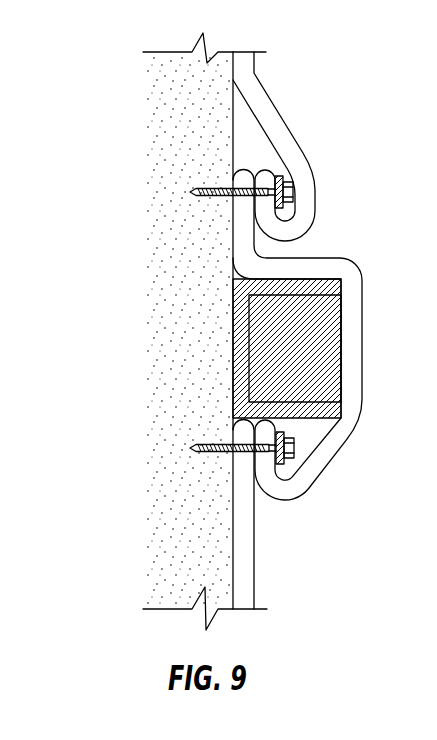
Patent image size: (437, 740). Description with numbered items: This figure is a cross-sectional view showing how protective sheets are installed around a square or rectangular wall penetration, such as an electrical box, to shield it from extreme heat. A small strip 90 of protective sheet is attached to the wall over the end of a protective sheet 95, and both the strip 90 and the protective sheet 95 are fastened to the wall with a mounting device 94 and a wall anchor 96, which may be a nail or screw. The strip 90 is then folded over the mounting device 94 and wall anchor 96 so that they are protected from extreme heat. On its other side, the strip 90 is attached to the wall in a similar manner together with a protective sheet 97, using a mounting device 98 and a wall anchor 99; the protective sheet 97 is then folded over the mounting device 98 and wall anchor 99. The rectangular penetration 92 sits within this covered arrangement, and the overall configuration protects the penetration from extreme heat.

The strip 90 is at (329, 335).
The support tube 92 is at (268, 371).
The mounting device 94 is at (274, 477).
The protective sheet 95 is at (279, 515).
The wall anchor 96 is at (329, 471).
The protective sheet 97 is at (288, 146).
The mounting device 98 is at (278, 210).
The wall anchor 99 is at (325, 176).